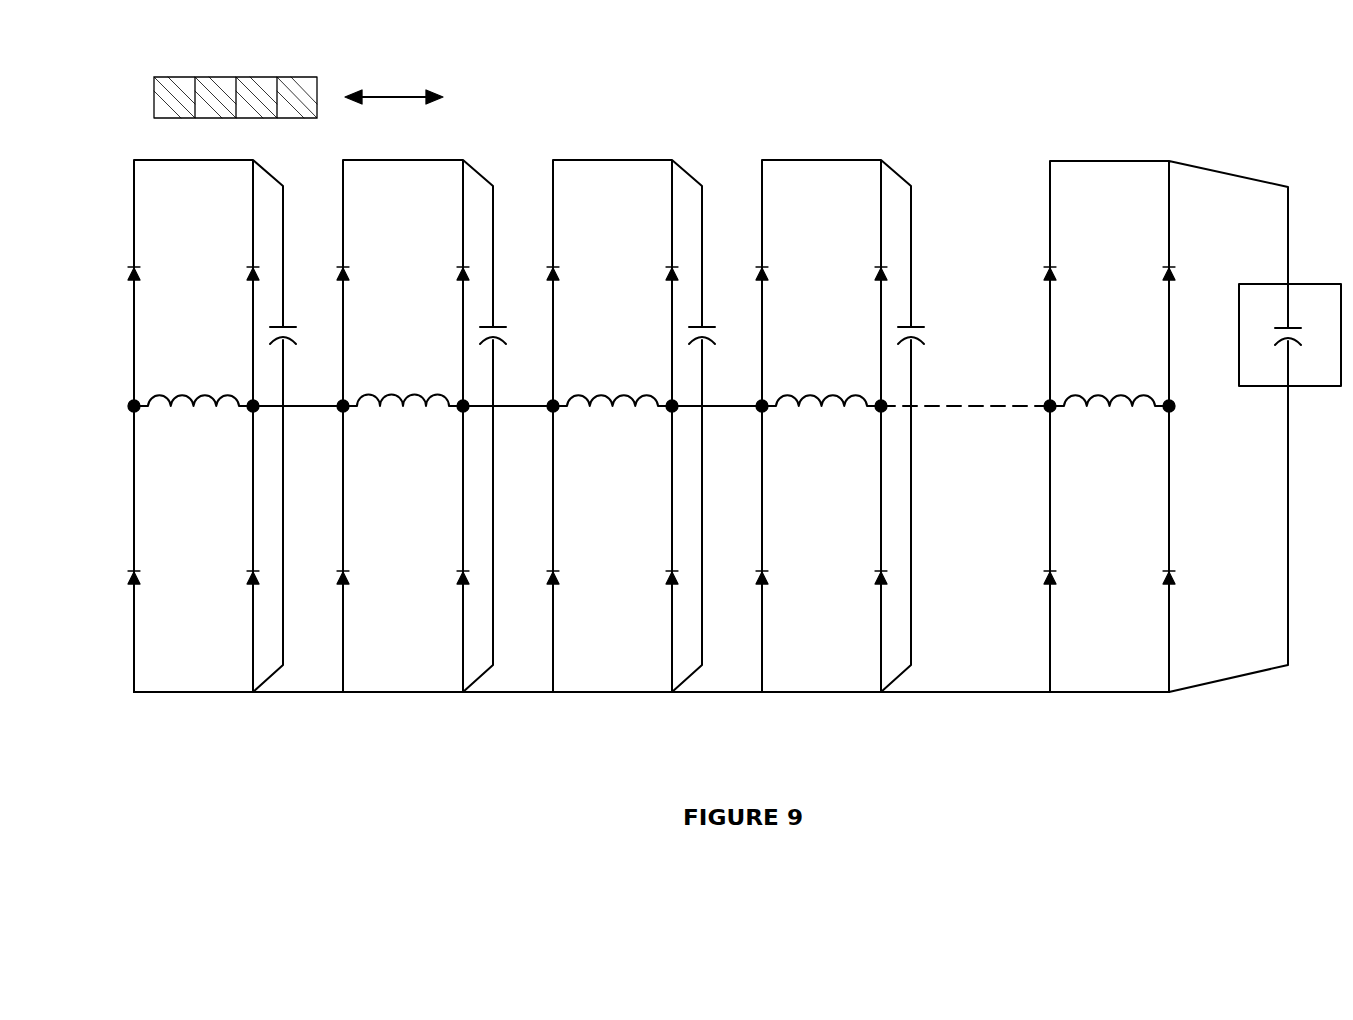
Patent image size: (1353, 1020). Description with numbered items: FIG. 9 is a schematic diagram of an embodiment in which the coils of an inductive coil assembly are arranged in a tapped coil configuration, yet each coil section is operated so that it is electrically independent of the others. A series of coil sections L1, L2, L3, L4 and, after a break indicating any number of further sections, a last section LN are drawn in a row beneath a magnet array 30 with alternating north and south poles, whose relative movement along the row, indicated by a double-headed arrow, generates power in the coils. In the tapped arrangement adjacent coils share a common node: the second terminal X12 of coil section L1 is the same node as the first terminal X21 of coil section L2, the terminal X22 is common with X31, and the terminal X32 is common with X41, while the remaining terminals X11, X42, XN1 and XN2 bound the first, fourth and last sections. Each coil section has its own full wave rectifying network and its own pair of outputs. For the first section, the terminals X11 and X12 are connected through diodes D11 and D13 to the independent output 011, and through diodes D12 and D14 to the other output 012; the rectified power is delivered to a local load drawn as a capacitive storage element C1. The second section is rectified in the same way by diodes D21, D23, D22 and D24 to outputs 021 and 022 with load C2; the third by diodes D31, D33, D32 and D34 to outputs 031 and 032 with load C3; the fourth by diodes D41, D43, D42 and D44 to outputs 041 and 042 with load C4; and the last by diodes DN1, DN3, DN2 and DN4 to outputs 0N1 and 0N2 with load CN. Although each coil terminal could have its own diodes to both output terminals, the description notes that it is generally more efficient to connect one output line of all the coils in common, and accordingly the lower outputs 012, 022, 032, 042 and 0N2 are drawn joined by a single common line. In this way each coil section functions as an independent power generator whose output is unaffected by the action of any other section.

The permanent magnet array 30 is at (173, 77).
The output terminal of first coil section 011 is at (160, 159).
The other output terminal of first coil section 012 is at (183, 692).
The output terminal of second coil section 021 is at (412, 160).
The other output terminal of second coil section 022 is at (393, 692).
The output terminal of third coil section 031 is at (622, 160).
The other output terminal of third coil section 032 is at (593, 692).
The output terminal of fourth coil section 041 is at (832, 160).
The other output terminal of fourth coil section 042 is at (810, 692).
The output terminal of Nth coil section 0N1 is at (1118, 161).
The other output terminal of Nth coil section 0N2 is at (1100, 692).
The rectifying diode D11 is at (112, 263).
The rectifying diode D12 is at (112, 568).
The rectifying diode D13 is at (231, 263).
The rectifying diode D14 is at (231, 568).
The rectifying diode D21 is at (321, 263).
The rectifying diode D22 is at (321, 568).
The rectifying diode D23 is at (441, 263).
The rectifying diode D24 is at (441, 568).
The rectifying diode D31 is at (531, 263).
The rectifying diode D32 is at (531, 568).
The rectifying diode D33 is at (650, 263).
The rectifying diode D34 is at (650, 568).
The rectifying diode D41 is at (740, 263).
The rectifying diode D42 is at (740, 568).
The rectifying diode D43 is at (859, 263).
The rectifying diode D44 is at (859, 568).
The rectifying diode DN1 is at (1027, 263).
The rectifying diode DN2 is at (1027, 568).
The rectifying diode DN3 is at (1146, 263).
The rectifying diode DN4 is at (1146, 568).
The local load C1 is at (293, 325).
The local load C2 is at (503, 325).
The local load C3 is at (712, 325).
The local load C4 is at (921, 325).
The local load CN is at (1290, 335).
The coil section L1 is at (193, 385).
The coil section L2 is at (403, 385).
The coil section L3 is at (612, 385).
The coil section L4 is at (821, 385).
The coil section LN is at (1109, 387).
The coil terminal X11 is at (135, 409).
The coil terminal X12 is at (252, 410).
The coil terminal X21 is at (344, 409).
The coil terminal X22 is at (462, 410).
The coil terminal X31 is at (554, 409).
The coil terminal X32 is at (671, 410).
The coil terminal X41 is at (763, 409).
The coil terminal X42 is at (880, 410).
The coil terminal XN1 is at (1051, 409).
The coil terminal XN2 is at (1168, 410).